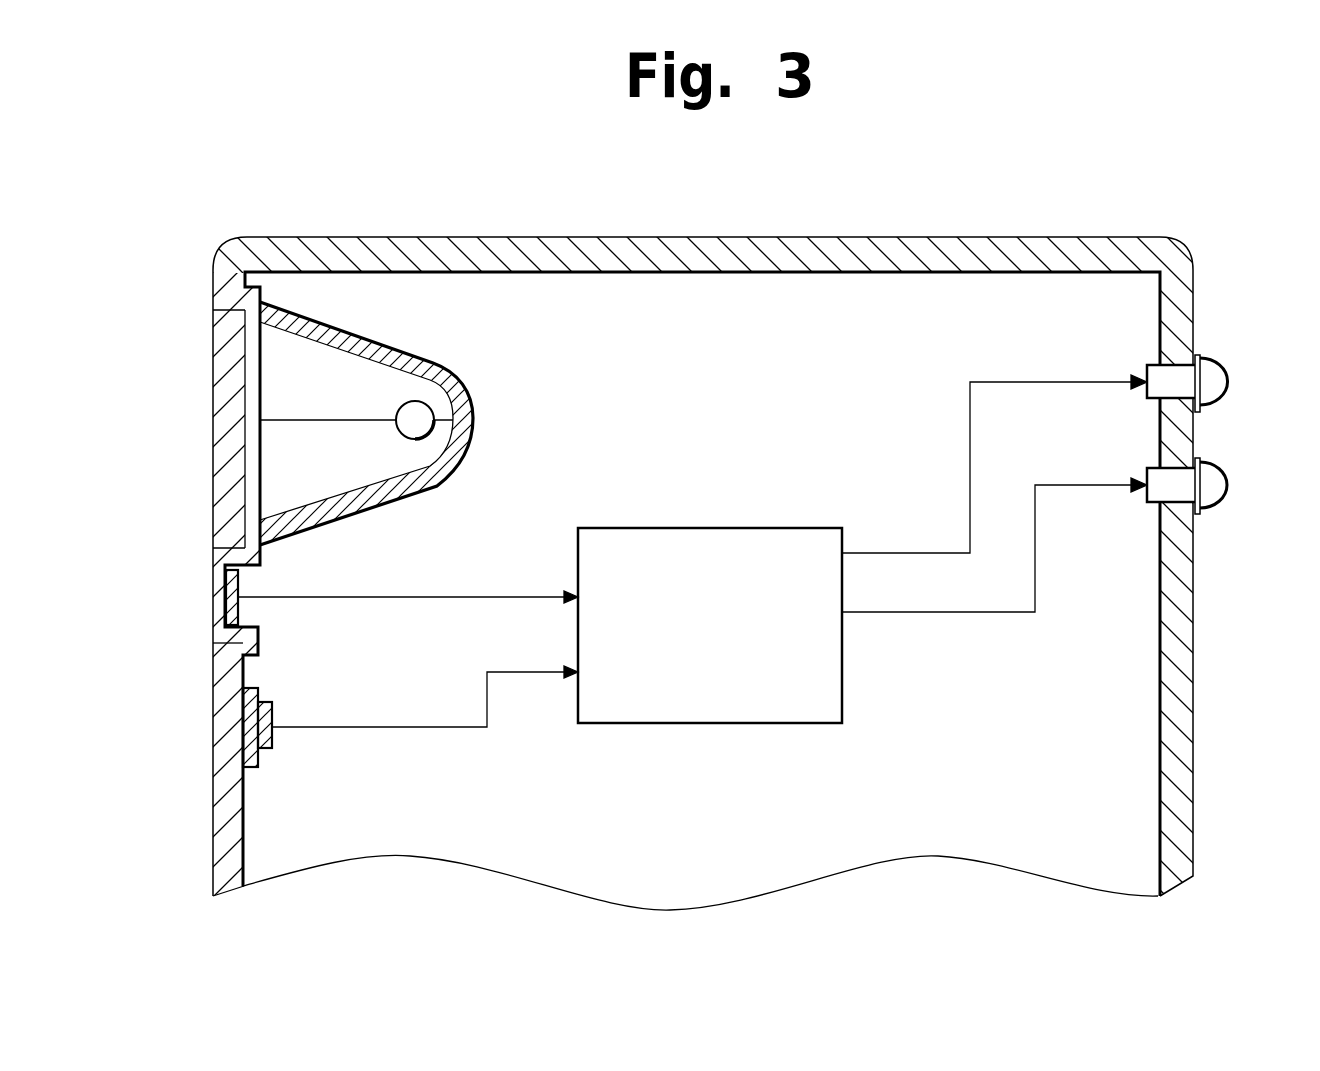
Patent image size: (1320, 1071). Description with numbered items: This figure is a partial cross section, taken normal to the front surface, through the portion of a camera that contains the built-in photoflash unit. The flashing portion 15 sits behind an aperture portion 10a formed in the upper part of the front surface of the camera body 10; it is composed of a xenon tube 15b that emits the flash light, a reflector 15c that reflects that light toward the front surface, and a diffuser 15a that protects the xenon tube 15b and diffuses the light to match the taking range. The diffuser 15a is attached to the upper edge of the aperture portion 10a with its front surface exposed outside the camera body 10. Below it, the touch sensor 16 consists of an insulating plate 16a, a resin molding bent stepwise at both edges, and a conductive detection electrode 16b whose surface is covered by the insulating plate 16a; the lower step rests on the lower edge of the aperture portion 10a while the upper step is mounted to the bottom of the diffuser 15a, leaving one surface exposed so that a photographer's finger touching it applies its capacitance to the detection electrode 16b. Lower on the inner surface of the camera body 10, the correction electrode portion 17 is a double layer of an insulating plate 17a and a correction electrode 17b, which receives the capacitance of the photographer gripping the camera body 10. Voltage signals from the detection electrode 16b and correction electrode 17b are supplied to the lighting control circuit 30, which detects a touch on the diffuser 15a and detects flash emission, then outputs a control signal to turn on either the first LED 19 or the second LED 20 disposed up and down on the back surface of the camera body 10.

The camera body 10 is at (990, 237).
The aperture portion 10a is at (180, 306).
The flashing portion 15 is at (409, 329).
The diffuser 15a is at (213, 305).
The xenon tube 15b is at (428, 433).
The reflector 15c is at (475, 383).
The touch sensor 16 is at (246, 584).
The insulating plate 16a is at (214, 632).
The detection electrode 16b is at (240, 608).
The correction electrode portion 17 is at (285, 698).
The insulating plate 17a is at (258, 769).
The correction electrode 17b is at (272, 745).
The first LED 19 is at (1228, 376).
The second LED 20 is at (1228, 480).
The lighting control circuit 30 is at (752, 724).